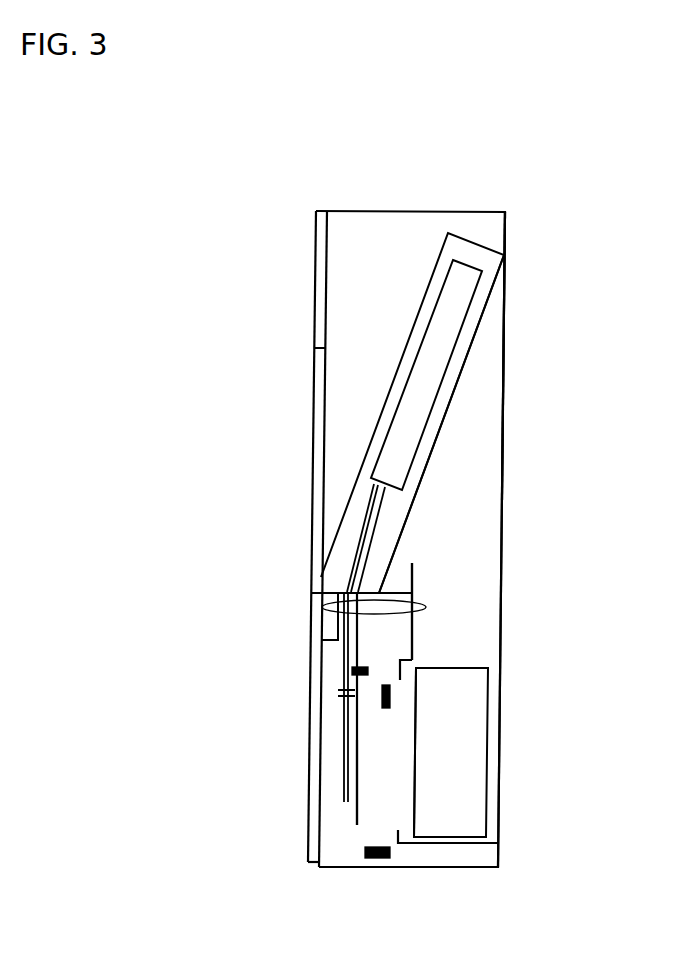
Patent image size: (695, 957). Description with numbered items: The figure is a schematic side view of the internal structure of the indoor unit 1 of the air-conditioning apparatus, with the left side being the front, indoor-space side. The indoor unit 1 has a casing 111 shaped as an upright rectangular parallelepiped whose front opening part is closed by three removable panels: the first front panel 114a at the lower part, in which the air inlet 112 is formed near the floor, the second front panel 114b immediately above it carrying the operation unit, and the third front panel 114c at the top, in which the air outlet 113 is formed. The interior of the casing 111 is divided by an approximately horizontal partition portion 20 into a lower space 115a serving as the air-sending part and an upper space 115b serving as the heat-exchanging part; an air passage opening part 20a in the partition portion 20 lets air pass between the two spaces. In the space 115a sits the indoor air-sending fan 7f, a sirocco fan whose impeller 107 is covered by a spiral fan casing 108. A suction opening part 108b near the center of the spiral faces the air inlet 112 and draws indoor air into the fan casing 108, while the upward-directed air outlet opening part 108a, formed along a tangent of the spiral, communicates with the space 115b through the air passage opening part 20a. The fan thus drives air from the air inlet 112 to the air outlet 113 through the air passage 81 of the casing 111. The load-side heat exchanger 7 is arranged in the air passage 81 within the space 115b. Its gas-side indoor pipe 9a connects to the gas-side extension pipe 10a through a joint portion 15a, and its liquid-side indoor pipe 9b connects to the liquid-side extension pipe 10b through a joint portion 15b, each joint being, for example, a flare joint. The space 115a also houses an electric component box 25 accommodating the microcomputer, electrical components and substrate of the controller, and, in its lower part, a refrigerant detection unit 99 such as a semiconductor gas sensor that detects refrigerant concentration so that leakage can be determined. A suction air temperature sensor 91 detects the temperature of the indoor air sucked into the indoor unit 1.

The indoor unit 1 is at (446, 510).
The casing 111 is at (572, 539).
The space being a heat-exchanging part 115b is at (559, 356).
The air passage 81 is at (493, 424).
The third front panel 114c is at (252, 279).
The air outlet 113 is at (259, 539).
The second front panel 114b is at (246, 474).
The first front panel 114a is at (240, 731).
The air inlet 112 is at (251, 822).
The load-side heat exchanger 7 is at (385, 399).
The gas-side indoor pipe 9a is at (362, 495).
The liquid-side indoor pipe 9b is at (395, 497).
The partition portion 20 is at (330, 592).
The air passage opening part 20a is at (515, 610).
The joint portion 15b is at (502, 647).
The air outlet opening part 108a is at (322, 605).
The electric component box 25 is at (268, 621).
The fan casing 108 is at (276, 666).
The gas-side extension pipe 10a is at (272, 709).
The liquid-side extension pipe 10b is at (268, 697).
The joint portion 15a is at (271, 705).
The suction air temperature sensor 91 is at (381, 709).
The suction opening part 108b is at (396, 768).
The refrigerant detection unit 99 is at (378, 886).
The impeller 107 is at (509, 752).
The indoor air-sending fan 7f is at (500, 752).
The space being an air-sending part 115a is at (507, 842).